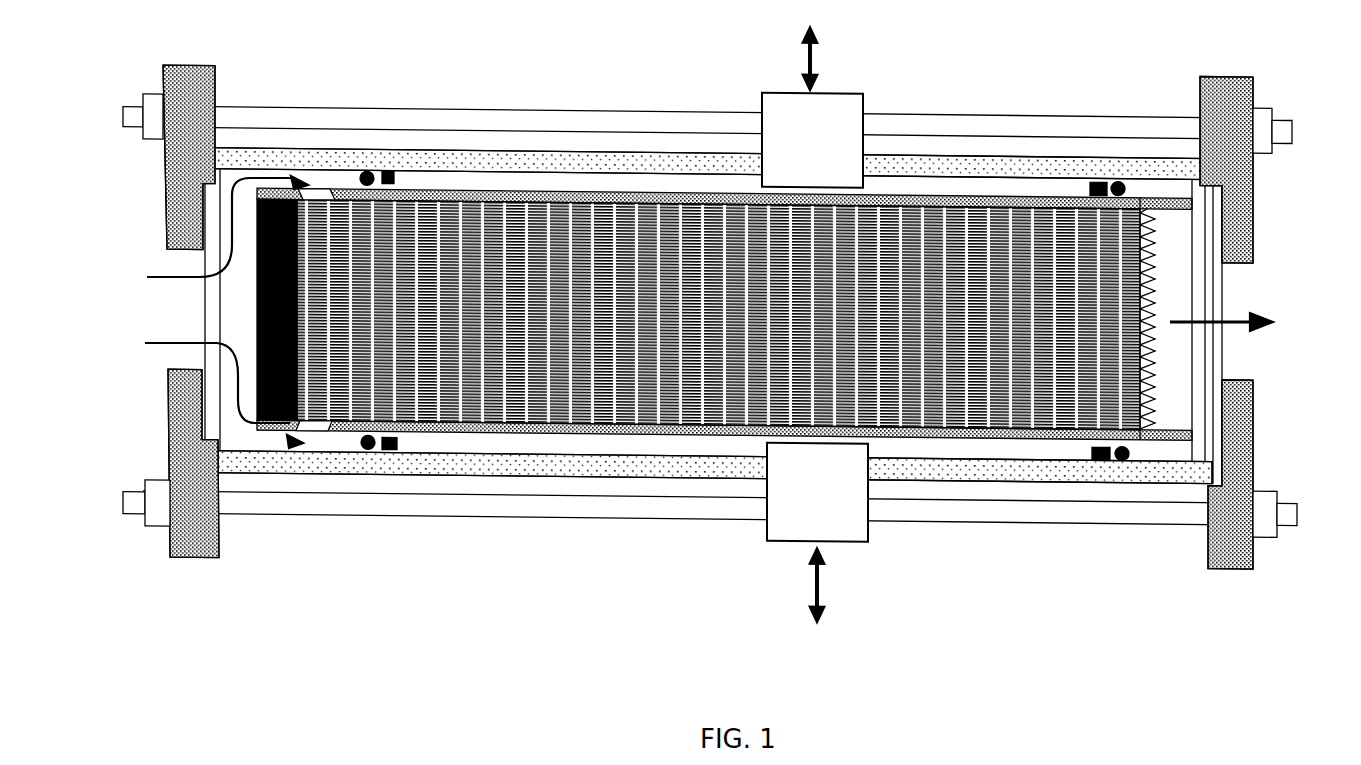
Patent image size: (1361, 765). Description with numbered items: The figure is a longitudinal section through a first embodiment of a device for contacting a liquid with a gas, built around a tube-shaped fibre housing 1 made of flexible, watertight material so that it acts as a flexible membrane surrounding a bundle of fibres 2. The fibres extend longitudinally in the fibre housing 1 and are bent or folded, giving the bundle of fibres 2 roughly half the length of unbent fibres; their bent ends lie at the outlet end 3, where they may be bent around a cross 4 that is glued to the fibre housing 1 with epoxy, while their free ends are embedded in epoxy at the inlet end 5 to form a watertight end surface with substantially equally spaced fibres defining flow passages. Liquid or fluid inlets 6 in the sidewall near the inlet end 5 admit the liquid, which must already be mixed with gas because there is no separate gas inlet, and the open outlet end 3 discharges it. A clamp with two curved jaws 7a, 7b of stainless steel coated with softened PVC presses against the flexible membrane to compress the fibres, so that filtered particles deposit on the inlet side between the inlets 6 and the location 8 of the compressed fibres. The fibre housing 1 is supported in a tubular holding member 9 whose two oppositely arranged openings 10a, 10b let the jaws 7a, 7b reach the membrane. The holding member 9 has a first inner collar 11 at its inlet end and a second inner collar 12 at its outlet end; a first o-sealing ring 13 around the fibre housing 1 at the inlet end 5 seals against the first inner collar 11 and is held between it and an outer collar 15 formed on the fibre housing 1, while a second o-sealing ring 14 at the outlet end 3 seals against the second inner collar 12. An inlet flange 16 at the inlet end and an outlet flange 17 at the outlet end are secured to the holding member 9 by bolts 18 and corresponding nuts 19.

The fibre housing 1 is at (980, 431).
The bundle of fibres 2 is at (470, 372).
The outlet end 3 is at (1155, 420).
The cross 4 is at (1153, 237).
The inlet end 5 is at (260, 224).
The liquid or fluid inlets 6 is at (313, 424).
The curved jaw 7a is at (845, 85).
The curved jaw 7b is at (862, 598).
The location of the compressed fibres 8 is at (797, 415).
The holding member 9 is at (457, 160).
The opening 10a is at (753, 150).
The opening 10b is at (766, 500).
The first inner collar 11 is at (383, 177).
The second inner collar 12 is at (1097, 180).
The first o-sealing ring 13 is at (372, 442).
The second o-sealing ring 14 is at (1112, 458).
The outer collar 15 is at (340, 186).
The inlet flange 16 is at (195, 558).
The outlet flange 17 is at (1238, 567).
The bolts 18 is at (1140, 121).
The nuts 19 is at (1260, 100).